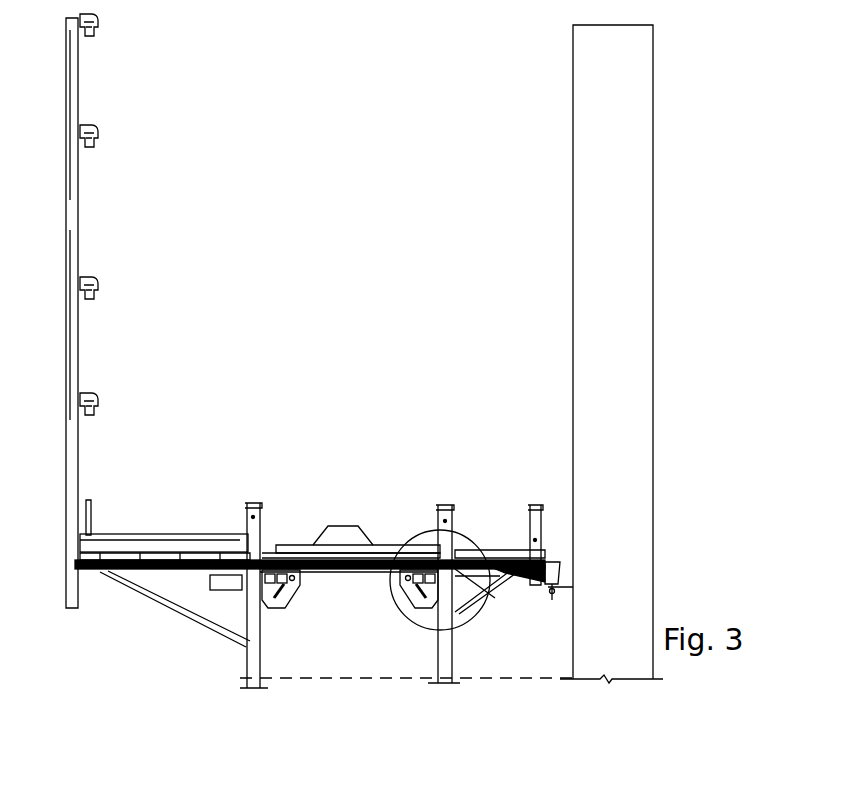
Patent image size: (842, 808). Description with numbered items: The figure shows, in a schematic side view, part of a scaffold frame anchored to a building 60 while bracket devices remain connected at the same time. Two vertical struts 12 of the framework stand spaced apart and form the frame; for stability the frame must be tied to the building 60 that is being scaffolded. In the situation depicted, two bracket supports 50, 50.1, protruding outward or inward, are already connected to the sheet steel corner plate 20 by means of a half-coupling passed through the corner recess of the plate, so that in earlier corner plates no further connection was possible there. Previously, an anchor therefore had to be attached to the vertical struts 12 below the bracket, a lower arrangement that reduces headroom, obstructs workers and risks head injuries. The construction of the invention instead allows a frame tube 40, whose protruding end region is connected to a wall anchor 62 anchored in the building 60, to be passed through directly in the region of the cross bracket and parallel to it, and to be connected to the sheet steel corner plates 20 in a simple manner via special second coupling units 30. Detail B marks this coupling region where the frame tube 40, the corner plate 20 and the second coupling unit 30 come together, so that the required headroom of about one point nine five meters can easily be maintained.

The vertical strut 12 is at (262, 652).
The sheet steel corner plate 20 is at (278, 607).
The second coupling unit 30 is at (351, 526).
The frame tube 40 is at (490, 598).
The bracket support 50 is at (502, 548).
The bracket support 50.1 is at (155, 532).
The building 60 is at (568, 432).
The wall anchor 62 is at (558, 594).
The detail B is at (418, 530).